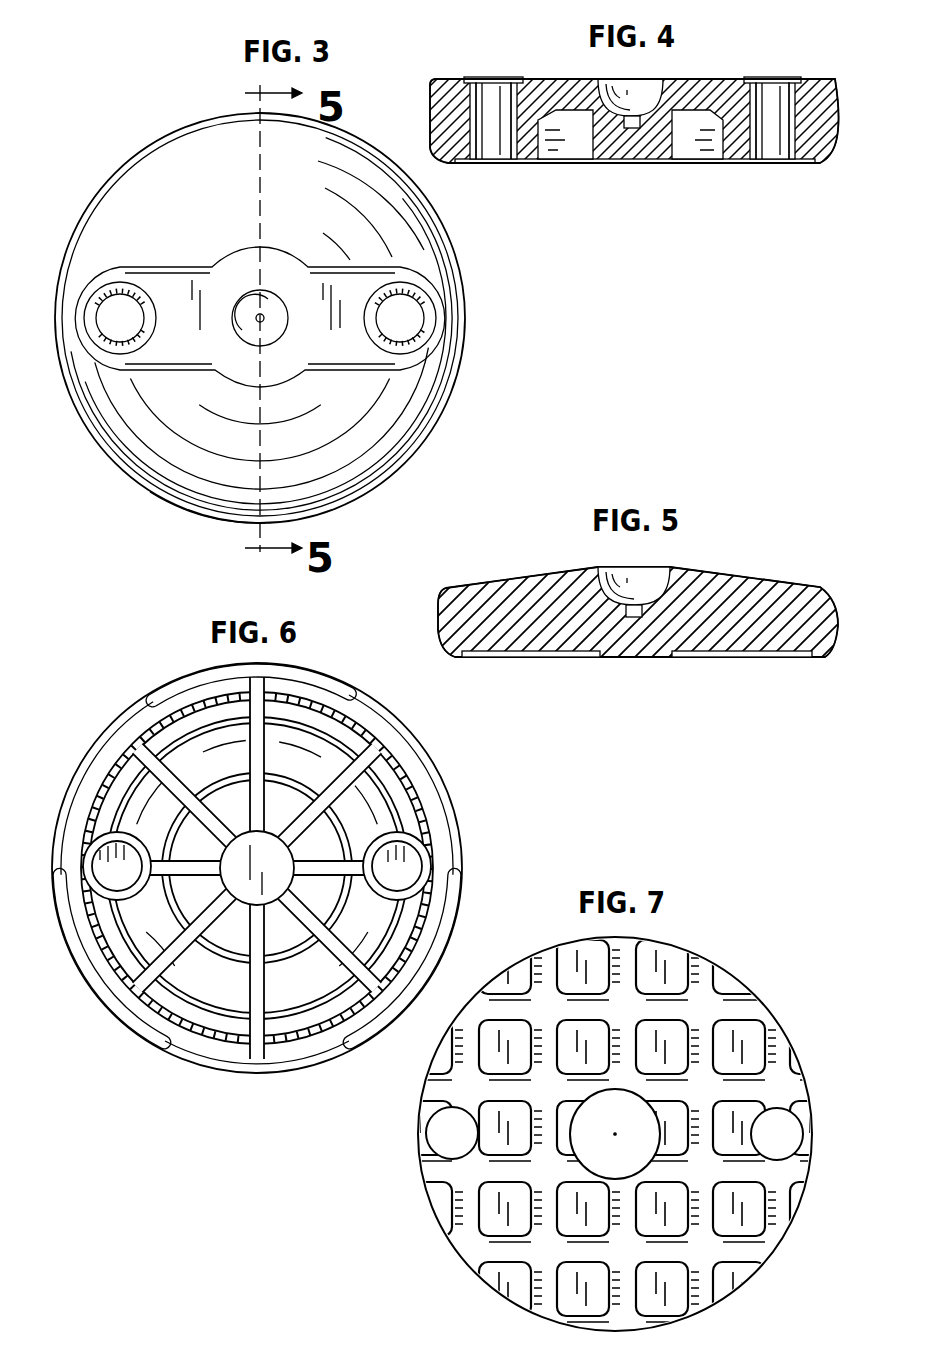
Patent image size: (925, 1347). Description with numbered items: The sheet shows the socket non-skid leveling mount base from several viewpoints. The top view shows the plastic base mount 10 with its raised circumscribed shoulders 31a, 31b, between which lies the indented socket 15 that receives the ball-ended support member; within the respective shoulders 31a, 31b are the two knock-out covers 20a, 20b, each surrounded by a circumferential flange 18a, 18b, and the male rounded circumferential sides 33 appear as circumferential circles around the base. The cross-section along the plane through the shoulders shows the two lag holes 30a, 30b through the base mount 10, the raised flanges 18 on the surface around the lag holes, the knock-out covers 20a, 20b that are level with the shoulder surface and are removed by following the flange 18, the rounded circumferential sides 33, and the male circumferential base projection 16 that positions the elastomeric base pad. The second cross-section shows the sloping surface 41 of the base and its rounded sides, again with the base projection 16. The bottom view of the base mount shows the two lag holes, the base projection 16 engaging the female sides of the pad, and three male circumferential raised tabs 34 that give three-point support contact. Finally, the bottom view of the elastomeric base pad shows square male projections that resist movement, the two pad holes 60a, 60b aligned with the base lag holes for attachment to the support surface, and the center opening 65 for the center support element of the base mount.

In FIG. 4, the plastic base mount 10 is at (838, 97).
In FIG. 3, the indented socket 15 is at (252, 340).
In FIG. 4, the male circumferential base projection 16 is at (452, 163).
In FIG. 5, the male circumferential base projection 16 is at (822, 658).
In FIG. 6, the male circumferential base projection 16 is at (420, 757).
In FIG. 4, the circumferential flange 18 is at (492, 77).
In FIG. 3, the circumferential flange 18a is at (100, 300).
In FIG. 3, the circumferential flange 18b is at (398, 350).
In FIG. 3, the knock-out cover 20a is at (118, 330).
In FIG. 4, the knock-out cover 20a is at (504, 78).
In FIG. 6, the knock-out cover 20a is at (105, 852).
In FIG. 3, the knock-out cover 20b is at (405, 335).
In FIG. 4, the knock-out cover 20b is at (760, 78).
In FIG. 6, the knock-out cover 20b is at (418, 850).
In FIG. 4, the lag hole 30a is at (491, 148).
In FIG. 4, the lag hole 30b is at (777, 147).
In FIG. 3, the raised circumscribed shoulder 31a is at (165, 267).
In FIG. 3, the raised circumscribed shoulder 31b is at (407, 368).
In FIG. 3, the rounded circumferential sides 33 is at (152, 493).
In FIG. 4, the rounded circumferential sides 33 is at (522, 162).
In FIG. 6, the male circumferential raised tabs 34 is at (302, 684).
In FIG. 5, the sloping surface 41 is at (528, 577).
In FIG. 7, the pad hole 60a is at (452, 1148).
In FIG. 7, the pad hole 60b is at (782, 1125).
In FIG. 7, the center opening 65 is at (634, 1124).